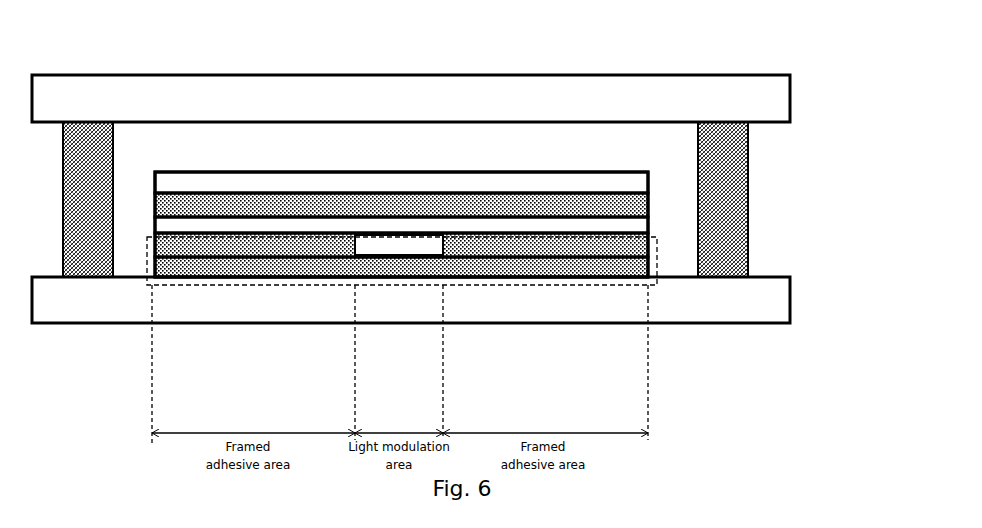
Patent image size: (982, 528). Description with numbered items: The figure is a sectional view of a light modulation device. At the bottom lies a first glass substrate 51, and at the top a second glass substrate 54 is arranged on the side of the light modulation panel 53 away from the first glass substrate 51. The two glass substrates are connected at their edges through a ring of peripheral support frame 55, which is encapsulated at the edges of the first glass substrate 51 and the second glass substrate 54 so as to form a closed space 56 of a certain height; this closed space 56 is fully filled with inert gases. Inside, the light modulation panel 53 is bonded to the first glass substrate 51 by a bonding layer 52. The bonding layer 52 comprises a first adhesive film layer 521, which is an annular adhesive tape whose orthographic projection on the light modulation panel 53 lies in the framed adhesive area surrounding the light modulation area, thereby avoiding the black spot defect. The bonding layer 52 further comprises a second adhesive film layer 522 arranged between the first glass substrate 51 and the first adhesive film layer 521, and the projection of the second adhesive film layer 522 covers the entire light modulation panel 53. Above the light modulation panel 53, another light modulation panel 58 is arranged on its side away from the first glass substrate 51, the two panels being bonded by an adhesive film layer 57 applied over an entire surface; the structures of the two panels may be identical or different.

The first glass substrate 51 is at (703, 307).
The bonding layer 52 is at (192, 278).
The first adhesive film layer 521 is at (244, 247).
The second adhesive film layer 522 is at (297, 267).
The light modulation panel 53 is at (518, 223).
The second glass substrate 54 is at (717, 98).
The support frame 55 is at (725, 207).
The closed space 56 is at (598, 150).
The polarizer layer 57 is at (297, 205).
The another light modulation panel 58 is at (440, 183).